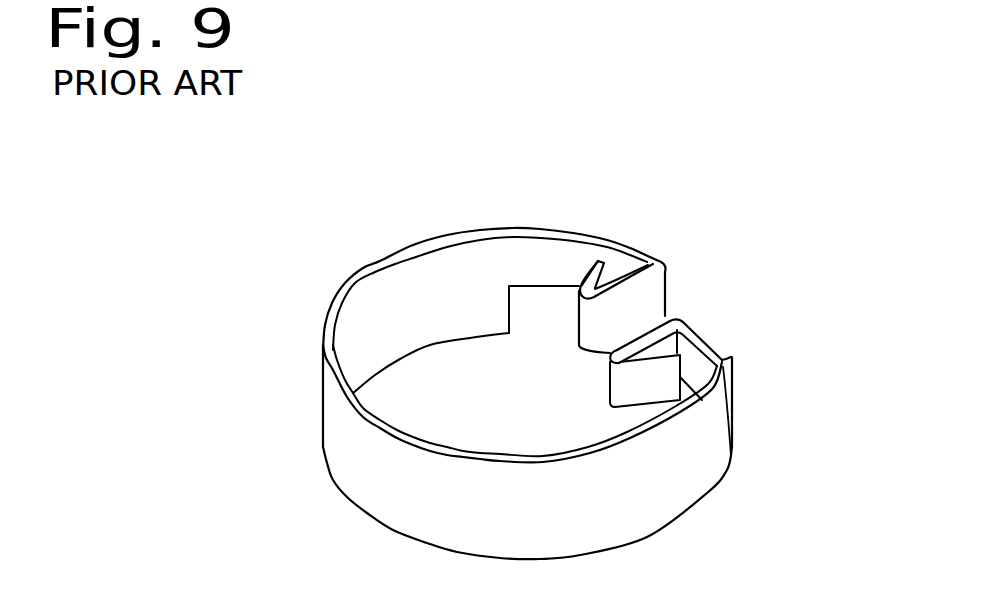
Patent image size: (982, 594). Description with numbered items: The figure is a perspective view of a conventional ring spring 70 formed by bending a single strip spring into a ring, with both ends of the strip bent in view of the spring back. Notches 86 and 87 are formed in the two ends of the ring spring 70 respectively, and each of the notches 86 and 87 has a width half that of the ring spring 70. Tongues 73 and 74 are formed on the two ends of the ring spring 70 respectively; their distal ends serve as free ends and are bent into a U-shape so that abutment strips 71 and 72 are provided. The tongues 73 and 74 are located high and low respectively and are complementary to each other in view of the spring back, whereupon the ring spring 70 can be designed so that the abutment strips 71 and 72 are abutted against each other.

The ring spring 70 is at (571, 206).
The abutment strip 71 is at (650, 295).
The abutment strip 72 is at (663, 343).
The tongue 73 is at (613, 237).
The tongue 74 is at (719, 346).
The notch 86 is at (510, 307).
The notch 87 is at (731, 355).